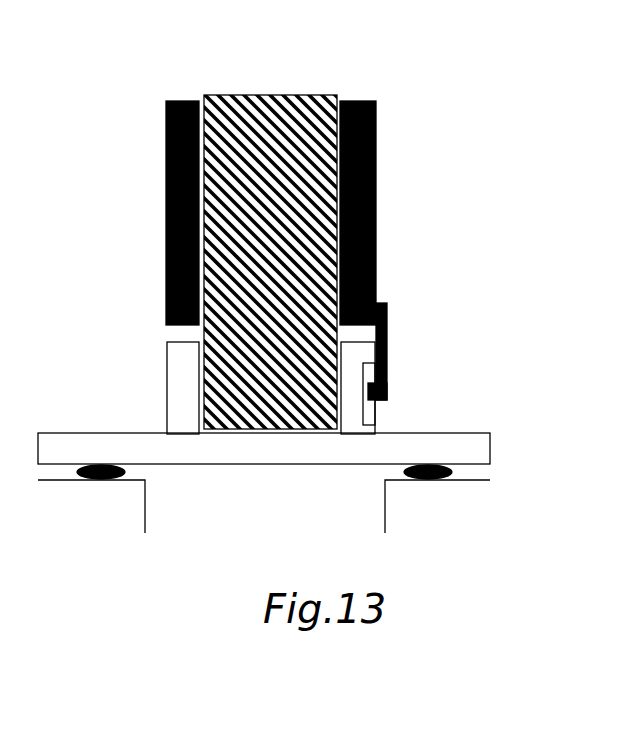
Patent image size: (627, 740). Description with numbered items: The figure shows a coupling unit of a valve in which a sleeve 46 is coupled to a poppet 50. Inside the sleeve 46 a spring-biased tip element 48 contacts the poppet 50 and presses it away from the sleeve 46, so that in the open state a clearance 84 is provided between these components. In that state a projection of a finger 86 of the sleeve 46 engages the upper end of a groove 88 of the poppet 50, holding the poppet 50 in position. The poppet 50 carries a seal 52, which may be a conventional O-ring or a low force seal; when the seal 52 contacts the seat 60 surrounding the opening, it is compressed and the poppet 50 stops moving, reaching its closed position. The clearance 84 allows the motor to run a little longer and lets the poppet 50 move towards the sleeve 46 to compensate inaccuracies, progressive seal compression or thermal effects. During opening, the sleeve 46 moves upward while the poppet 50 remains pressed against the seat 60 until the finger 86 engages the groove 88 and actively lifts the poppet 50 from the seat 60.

The sleeve 46 is at (376, 165).
The tip element 48 is at (245, 218).
The poppet 50 is at (490, 452).
The seal 52 is at (452, 470).
The seat 60 is at (95, 488).
The clearance 84 is at (166, 332).
The finger 86 is at (382, 373).
The groove 88 is at (375, 412).